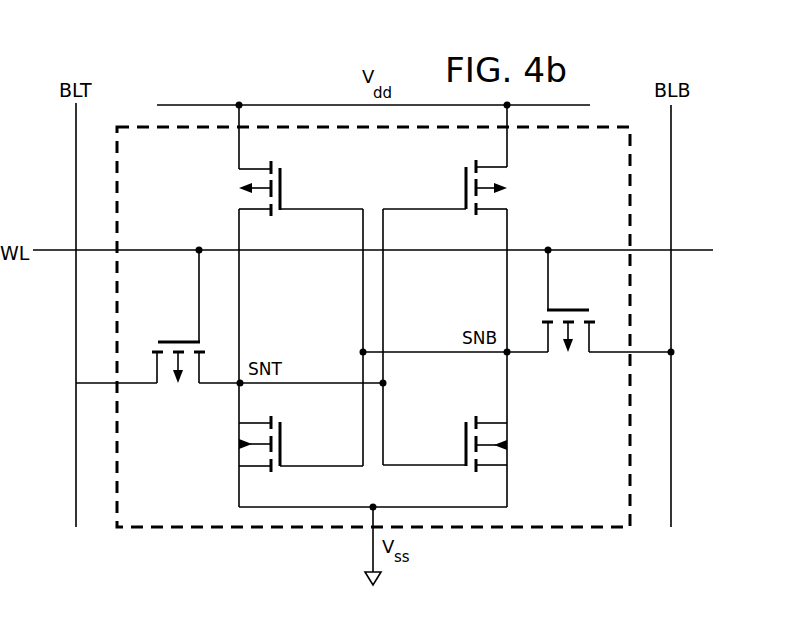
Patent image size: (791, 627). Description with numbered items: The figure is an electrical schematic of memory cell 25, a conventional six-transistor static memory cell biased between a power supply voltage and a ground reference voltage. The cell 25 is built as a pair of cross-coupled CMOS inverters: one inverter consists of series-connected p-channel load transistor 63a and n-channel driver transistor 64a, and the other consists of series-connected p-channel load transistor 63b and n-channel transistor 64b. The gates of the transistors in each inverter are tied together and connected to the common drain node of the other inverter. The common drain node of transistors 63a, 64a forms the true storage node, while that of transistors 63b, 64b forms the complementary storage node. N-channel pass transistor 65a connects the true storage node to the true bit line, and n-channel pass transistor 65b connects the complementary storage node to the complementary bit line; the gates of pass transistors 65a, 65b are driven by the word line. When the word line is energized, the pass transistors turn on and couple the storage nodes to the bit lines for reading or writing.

The memory cell 25 is at (522, 528).
The p-channel load transistor 63a is at (282, 182).
The p-channel load transistor 63b is at (464, 180).
The n-channel driver transistor 64a is at (282, 436).
The n-channel transistor 64b is at (464, 436).
The n-channel pass transistor 65a is at (167, 340).
The n-channel pass transistor 65b is at (580, 308).